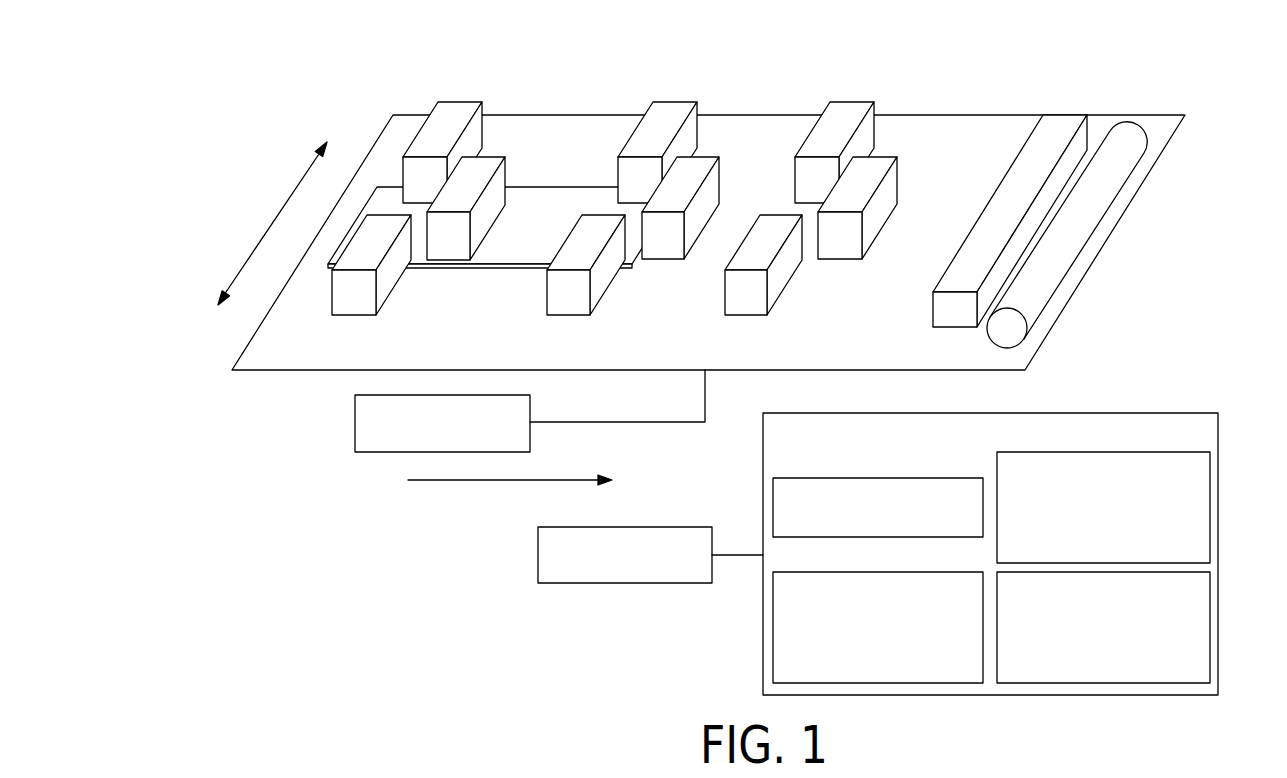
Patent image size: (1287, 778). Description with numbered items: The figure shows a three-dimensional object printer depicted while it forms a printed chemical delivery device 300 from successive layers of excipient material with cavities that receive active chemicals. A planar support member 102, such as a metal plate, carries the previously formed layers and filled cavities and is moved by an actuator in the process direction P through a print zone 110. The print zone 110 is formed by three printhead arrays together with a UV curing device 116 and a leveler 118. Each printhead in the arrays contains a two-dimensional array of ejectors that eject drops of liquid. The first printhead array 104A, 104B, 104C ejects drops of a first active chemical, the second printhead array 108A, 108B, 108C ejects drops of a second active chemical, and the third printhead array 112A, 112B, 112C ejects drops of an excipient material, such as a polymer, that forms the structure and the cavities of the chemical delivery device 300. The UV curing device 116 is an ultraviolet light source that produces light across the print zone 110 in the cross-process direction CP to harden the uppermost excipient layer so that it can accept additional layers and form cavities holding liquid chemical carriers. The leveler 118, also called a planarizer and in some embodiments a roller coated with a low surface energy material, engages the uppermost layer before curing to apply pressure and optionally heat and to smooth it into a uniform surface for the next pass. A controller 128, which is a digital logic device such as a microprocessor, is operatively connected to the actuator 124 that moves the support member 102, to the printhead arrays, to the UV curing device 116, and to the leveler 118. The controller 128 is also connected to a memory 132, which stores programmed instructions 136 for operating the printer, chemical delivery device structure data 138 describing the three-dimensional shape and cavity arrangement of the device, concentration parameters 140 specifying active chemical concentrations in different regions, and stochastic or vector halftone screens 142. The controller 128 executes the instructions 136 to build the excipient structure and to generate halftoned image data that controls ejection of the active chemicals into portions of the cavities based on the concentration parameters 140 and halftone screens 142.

The support member 102 is at (743, 372).
The printhead array 104A is at (460, 100).
The printhead array 104B is at (498, 197).
The printhead array 104C is at (385, 277).
The printhead array 108A is at (673, 100).
The printhead array 108B is at (712, 197).
The printhead array 108C is at (600, 275).
The print zone 110 is at (563, 68).
The printhead array 112A is at (850, 100).
The printhead array 112B is at (888, 197).
The printhead array 112C is at (782, 277).
The UV curing device 116 is at (1065, 112).
The leveler 118 is at (1125, 122).
The actuator 124 is at (355, 421).
The controller 128 is at (625, 585).
The memory 132 is at (1095, 413).
The programmed instructions 136 is at (773, 507).
The chemical delivery device structure data 138 is at (1210, 505).
The concentration parameters 140 is at (773, 630).
The stochastic or vector halftone screens 142 is at (1210, 630).
The chemical delivery device 300 is at (497, 272).
The cross-process direction CP is at (277, 215).
The process direction P is at (492, 483).